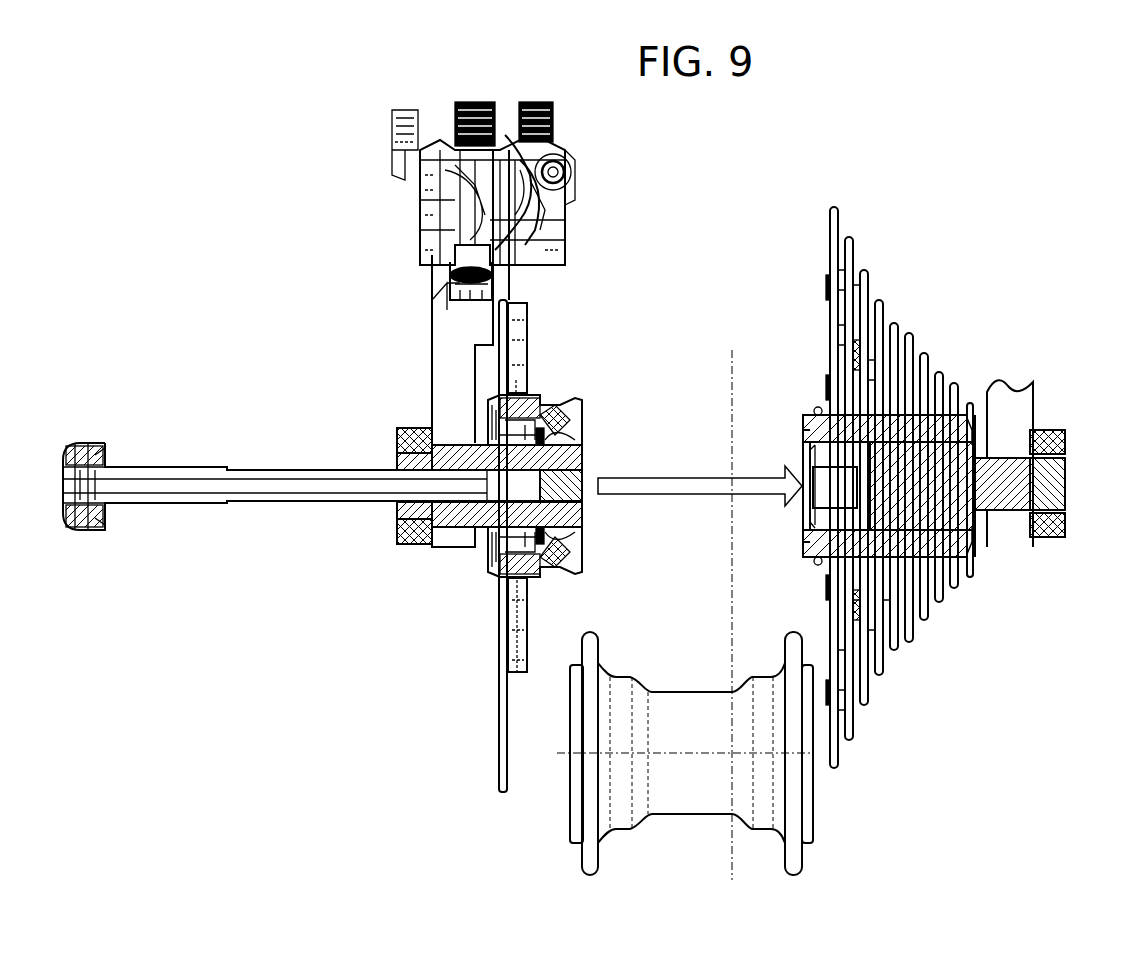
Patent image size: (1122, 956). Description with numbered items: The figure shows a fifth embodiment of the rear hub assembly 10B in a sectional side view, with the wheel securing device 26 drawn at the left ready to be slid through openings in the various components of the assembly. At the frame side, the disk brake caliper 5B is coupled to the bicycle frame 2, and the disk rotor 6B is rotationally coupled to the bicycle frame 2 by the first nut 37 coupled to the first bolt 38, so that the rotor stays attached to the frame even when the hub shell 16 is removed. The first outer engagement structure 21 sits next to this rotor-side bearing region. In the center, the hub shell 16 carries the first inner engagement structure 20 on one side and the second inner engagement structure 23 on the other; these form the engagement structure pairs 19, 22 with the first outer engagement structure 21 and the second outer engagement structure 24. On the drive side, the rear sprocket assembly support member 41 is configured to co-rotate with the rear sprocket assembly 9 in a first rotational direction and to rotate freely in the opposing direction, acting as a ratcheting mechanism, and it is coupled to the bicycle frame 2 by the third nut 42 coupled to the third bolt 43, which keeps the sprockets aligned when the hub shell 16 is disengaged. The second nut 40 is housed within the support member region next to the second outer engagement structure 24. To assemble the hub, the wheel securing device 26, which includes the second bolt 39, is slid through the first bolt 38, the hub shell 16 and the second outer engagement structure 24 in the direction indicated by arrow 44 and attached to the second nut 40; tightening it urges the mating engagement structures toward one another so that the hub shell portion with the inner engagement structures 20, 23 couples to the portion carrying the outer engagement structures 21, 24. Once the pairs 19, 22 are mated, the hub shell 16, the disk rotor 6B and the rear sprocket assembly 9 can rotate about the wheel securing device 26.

The disk brake caliper 5B is at (582, 96).
The rear hub assembly 10B is at (786, 157).
The bicycle frame 2 is at (432, 355).
The disk rotor 6B is at (500, 702).
The wheel securing device 26 is at (266, 503).
The second bolt 39 is at (583, 488).
The first bolt 38 is at (418, 429).
The first nut 37 is at (400, 460).
The first outer engagement structure 21 is at (589, 411).
The arrow 44 is at (634, 476).
The second outer engagement structure 24 is at (797, 426).
The second nut 40 is at (830, 509).
The rear sprocket assembly support member 41 is at (893, 437).
The third nut 42 is at (1066, 446).
The third bolt 43 is at (1066, 489).
The rear sprocket assembly 9 is at (980, 405).
The hub shell 16 is at (565, 876).
The engagement structure pair 19 is at (561, 726).
The engagement structure pair 22 is at (815, 650).
The first inner engagement structure 20 is at (555, 660).
The second inner engagement structure 23 is at (812, 660).